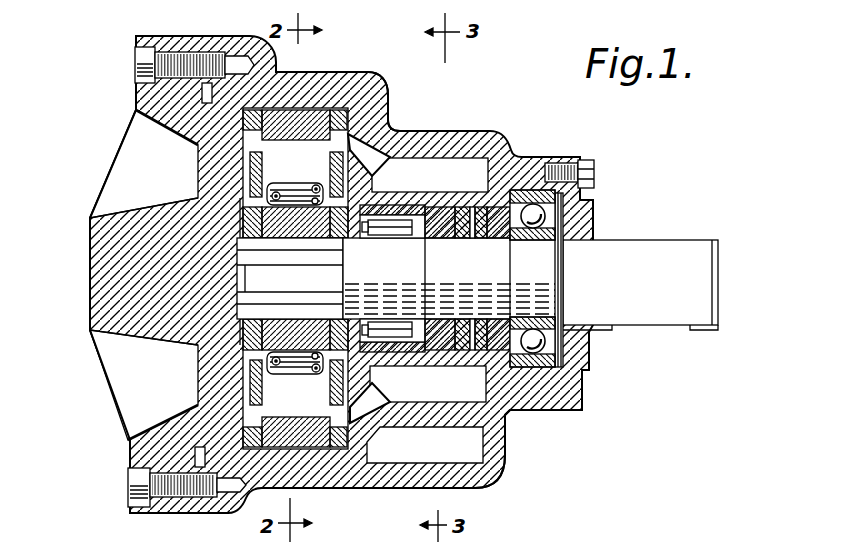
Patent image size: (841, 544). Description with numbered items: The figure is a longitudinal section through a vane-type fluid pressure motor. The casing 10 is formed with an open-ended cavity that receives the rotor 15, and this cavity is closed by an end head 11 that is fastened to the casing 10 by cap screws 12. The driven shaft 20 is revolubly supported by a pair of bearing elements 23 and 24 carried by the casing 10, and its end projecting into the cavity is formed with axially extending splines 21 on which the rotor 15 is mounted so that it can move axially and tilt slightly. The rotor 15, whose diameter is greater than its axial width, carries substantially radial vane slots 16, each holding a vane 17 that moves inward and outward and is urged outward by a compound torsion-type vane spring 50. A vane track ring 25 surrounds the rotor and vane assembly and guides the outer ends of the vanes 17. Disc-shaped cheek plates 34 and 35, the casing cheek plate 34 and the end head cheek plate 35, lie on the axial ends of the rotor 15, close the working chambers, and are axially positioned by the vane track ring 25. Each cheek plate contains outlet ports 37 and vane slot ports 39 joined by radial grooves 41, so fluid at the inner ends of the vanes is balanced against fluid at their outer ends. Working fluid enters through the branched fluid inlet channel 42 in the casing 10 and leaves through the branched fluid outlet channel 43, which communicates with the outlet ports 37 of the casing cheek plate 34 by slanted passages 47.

The casing 10 is at (327, 92).
The end head 11 is at (177, 40).
The cap screws 12 is at (138, 72).
The rotor 15 is at (330, 242).
The vane slots 16 is at (277, 268).
The vane 17 is at (276, 150).
The driven shaft 20 is at (680, 232).
The splines 21 is at (332, 282).
The bearing element 23 is at (557, 237).
The bearing element 24 is at (412, 239).
The vane track ring 25 is at (296, 278).
The casing cheek plate 34 is at (356, 118).
The end head cheek plate 35 is at (203, 125).
The outlet ports 37 is at (243, 122).
The vane slot ports 39 is at (232, 206).
The radial grooves 41 is at (373, 172).
The fluid inlet channel 42 is at (473, 453).
The fluid outlet channel 43 is at (463, 167).
The slanted passages 47 is at (372, 153).
The vane spring 50 is at (282, 180).